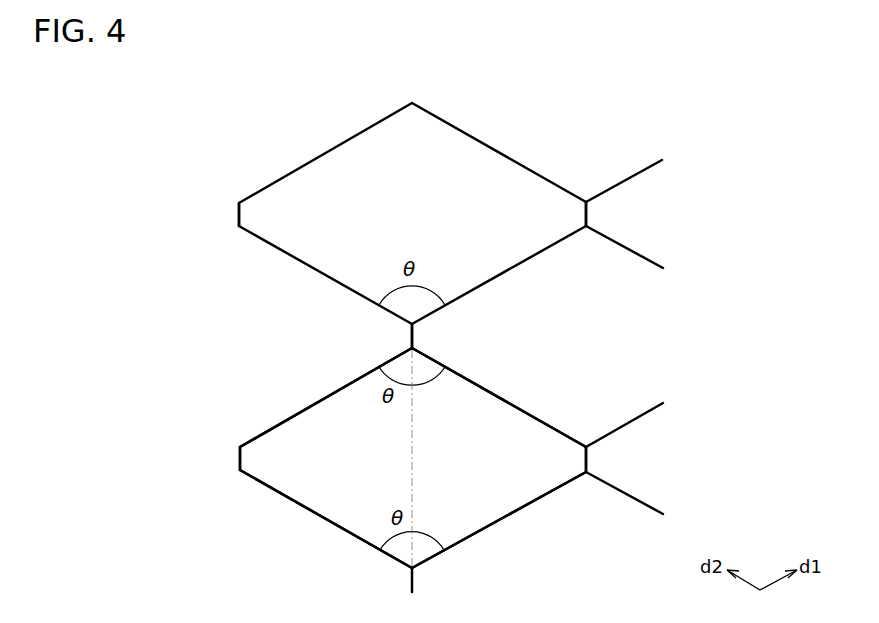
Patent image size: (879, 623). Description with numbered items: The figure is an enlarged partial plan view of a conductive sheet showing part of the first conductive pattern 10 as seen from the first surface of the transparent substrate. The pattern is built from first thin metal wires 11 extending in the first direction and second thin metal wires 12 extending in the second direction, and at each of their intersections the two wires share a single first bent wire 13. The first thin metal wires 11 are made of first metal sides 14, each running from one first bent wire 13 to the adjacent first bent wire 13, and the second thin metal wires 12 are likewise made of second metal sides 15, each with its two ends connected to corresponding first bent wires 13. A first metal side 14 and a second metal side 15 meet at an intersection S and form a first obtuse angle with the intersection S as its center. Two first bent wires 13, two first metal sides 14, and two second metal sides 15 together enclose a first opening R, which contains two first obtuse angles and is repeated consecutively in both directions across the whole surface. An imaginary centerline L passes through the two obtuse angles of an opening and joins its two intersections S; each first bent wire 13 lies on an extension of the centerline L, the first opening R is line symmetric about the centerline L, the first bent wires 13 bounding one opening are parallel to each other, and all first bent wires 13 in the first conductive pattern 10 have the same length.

The first conductive pattern 10 is at (633, 121).
The first thin metal wire 11 is at (262, 427).
The second thin metal wire 12 is at (647, 252).
The first bent wire 13 is at (412, 336).
The first metal side 14 is at (315, 407).
The second metal side 15 is at (288, 500).
The intersection S is at (417, 347).
The first opening R is at (368, 517).
The centerline L is at (420, 483).